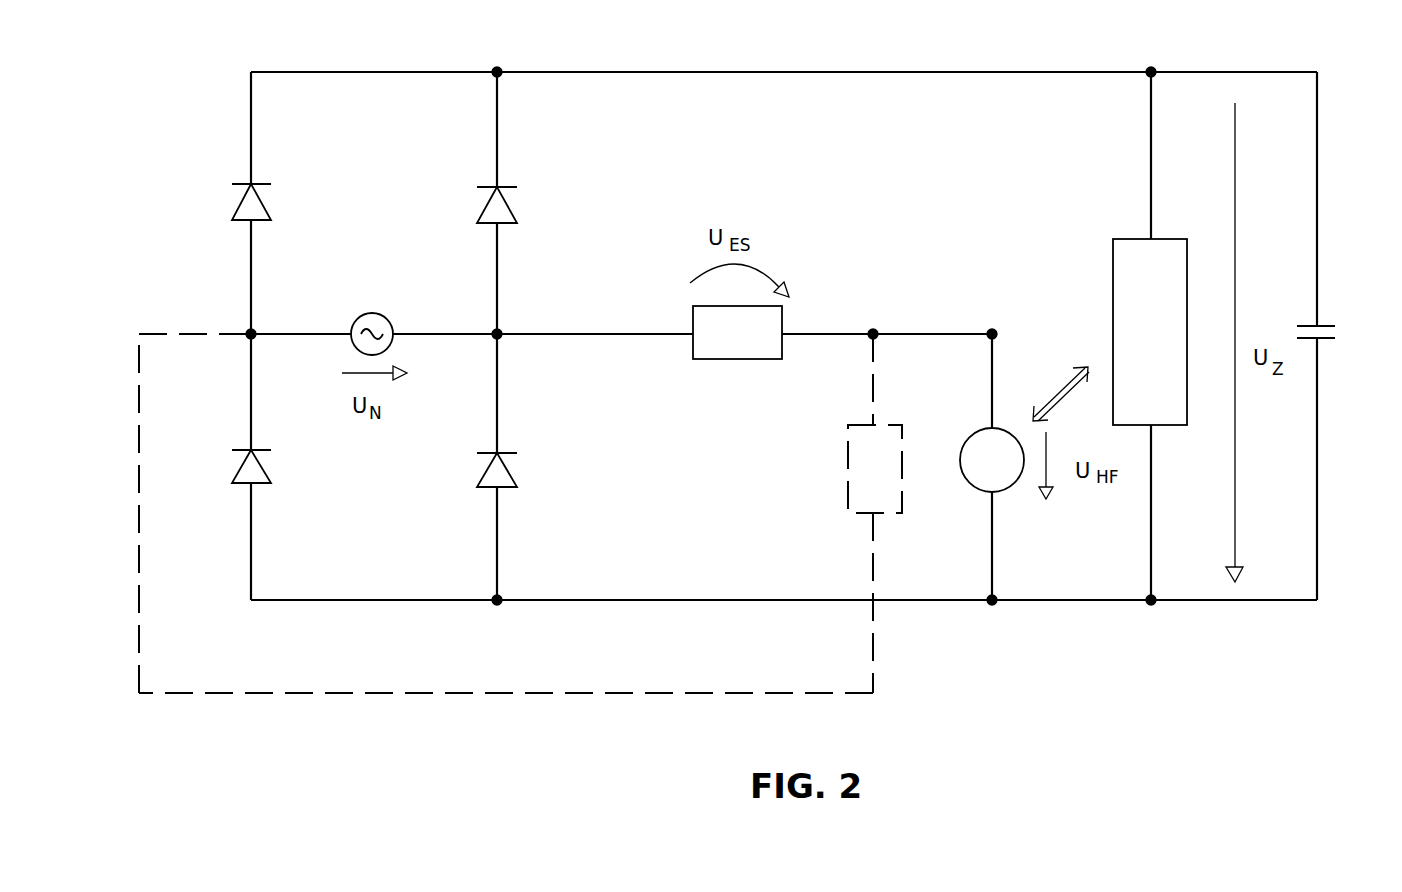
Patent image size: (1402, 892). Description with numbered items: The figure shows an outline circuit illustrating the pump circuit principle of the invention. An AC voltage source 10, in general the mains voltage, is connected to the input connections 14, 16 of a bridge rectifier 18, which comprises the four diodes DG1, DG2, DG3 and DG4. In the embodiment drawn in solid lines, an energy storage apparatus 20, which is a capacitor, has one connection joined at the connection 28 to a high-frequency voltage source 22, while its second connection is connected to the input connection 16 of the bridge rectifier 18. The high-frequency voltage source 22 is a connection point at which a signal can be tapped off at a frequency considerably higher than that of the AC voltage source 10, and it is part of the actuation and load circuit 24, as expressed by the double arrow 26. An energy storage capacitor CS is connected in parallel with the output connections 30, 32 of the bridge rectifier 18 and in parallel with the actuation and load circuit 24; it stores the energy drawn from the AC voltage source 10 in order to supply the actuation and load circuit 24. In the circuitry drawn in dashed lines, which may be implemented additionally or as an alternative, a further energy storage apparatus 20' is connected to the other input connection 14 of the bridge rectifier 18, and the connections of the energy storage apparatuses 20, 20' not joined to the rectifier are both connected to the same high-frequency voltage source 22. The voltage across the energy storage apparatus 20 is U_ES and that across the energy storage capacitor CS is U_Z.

The AC voltage source 10 is at (372, 318).
The input connection 14 is at (269, 321).
The input connection 16 is at (518, 321).
The bridge rectifier 18 is at (360, 51).
The energy storage apparatus 20 is at (737, 332).
The energy storage apparatus 20' is at (520, 513).
The high-frequency voltage source 22 is at (975, 460).
The actuation and load circuit 24 is at (1150, 332).
The double arrow 26 is at (1058, 392).
The connection 28 is at (994, 318).
The output connection 30 is at (496, 620).
The output connection 32 is at (498, 54).
The diode DG1 is at (285, 202).
The diode DG2 is at (529, 205).
The diode DG3 is at (285, 466).
The diode DG4 is at (530, 470).
The energy storage capacitor CS is at (1335, 333).